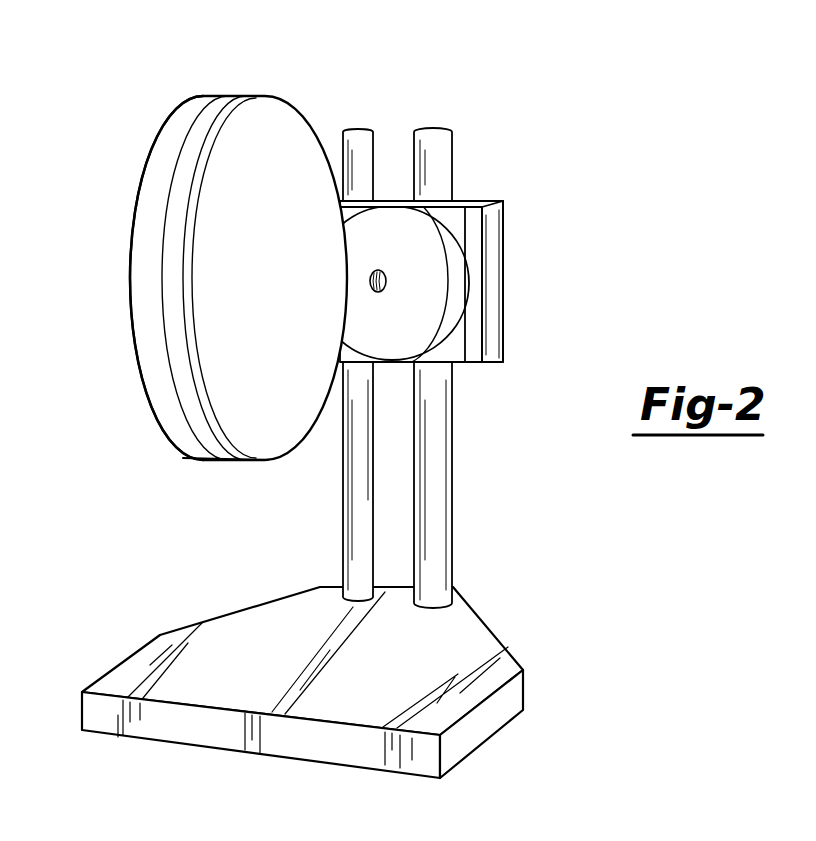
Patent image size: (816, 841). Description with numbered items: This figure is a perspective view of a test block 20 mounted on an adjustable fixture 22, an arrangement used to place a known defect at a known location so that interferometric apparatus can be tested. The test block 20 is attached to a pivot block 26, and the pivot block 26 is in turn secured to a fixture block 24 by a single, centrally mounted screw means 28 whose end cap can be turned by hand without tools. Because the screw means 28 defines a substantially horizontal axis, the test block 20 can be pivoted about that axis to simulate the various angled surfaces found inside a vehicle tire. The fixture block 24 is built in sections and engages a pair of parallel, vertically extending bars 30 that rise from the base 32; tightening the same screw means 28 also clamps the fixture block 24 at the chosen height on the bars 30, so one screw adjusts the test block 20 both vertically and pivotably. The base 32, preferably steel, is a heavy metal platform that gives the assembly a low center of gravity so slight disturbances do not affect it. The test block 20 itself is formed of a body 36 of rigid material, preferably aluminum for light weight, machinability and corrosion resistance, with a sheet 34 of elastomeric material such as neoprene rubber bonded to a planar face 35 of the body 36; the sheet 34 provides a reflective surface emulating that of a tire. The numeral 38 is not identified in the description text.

The test block 20 is at (219, 270).
The fixture 22 is at (457, 283).
The fixture block 24 is at (490, 268).
The pivot block 26 is at (450, 313).
The screw means 28 is at (386, 290).
The vertical bars 30 is at (447, 503).
The base 32 is at (118, 731).
The sheet 34 is at (262, 446).
The planar face 35 is at (214, 415).
The body 36 is at (190, 400).
The rear surface 38 is at (152, 373).